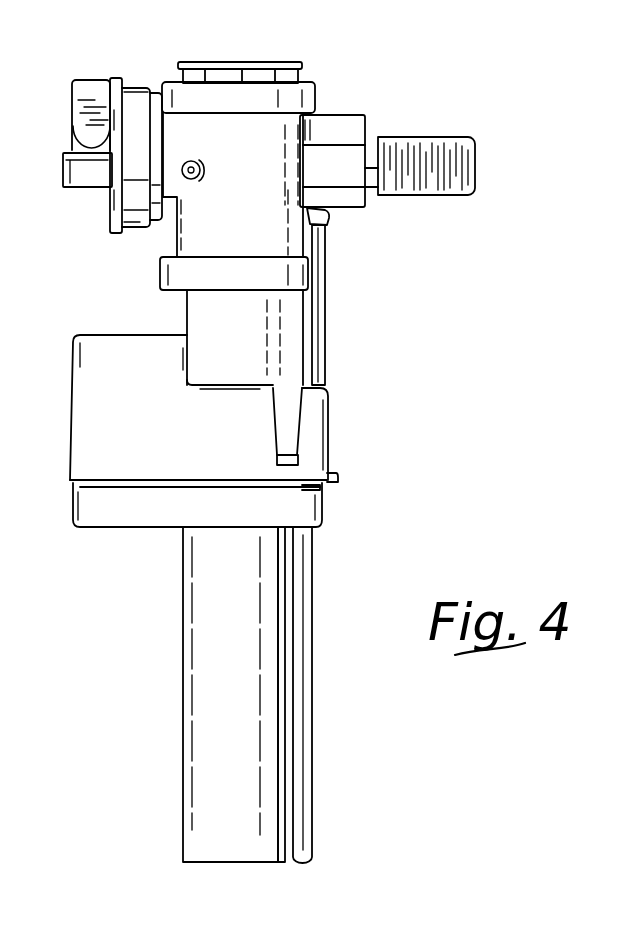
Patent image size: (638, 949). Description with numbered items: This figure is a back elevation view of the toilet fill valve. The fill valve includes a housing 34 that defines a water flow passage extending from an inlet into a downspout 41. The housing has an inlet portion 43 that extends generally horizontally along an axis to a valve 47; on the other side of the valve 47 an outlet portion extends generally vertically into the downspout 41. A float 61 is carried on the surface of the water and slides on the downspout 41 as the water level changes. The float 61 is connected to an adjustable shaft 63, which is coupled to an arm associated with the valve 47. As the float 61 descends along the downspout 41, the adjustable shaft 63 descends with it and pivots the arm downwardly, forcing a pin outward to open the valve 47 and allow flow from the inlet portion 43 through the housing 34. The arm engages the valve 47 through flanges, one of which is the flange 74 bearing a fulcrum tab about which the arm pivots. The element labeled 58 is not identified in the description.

The housing 34 is at (192, 142).
The downspout 41 is at (250, 693).
The inlet portion 43 is at (356, 122).
The valve 47 is at (106, 245).
The lever link 58 is at (277, 218).
The float 61 is at (96, 400).
The adjustable shaft 63 is at (303, 582).
The flange 74 is at (82, 135).